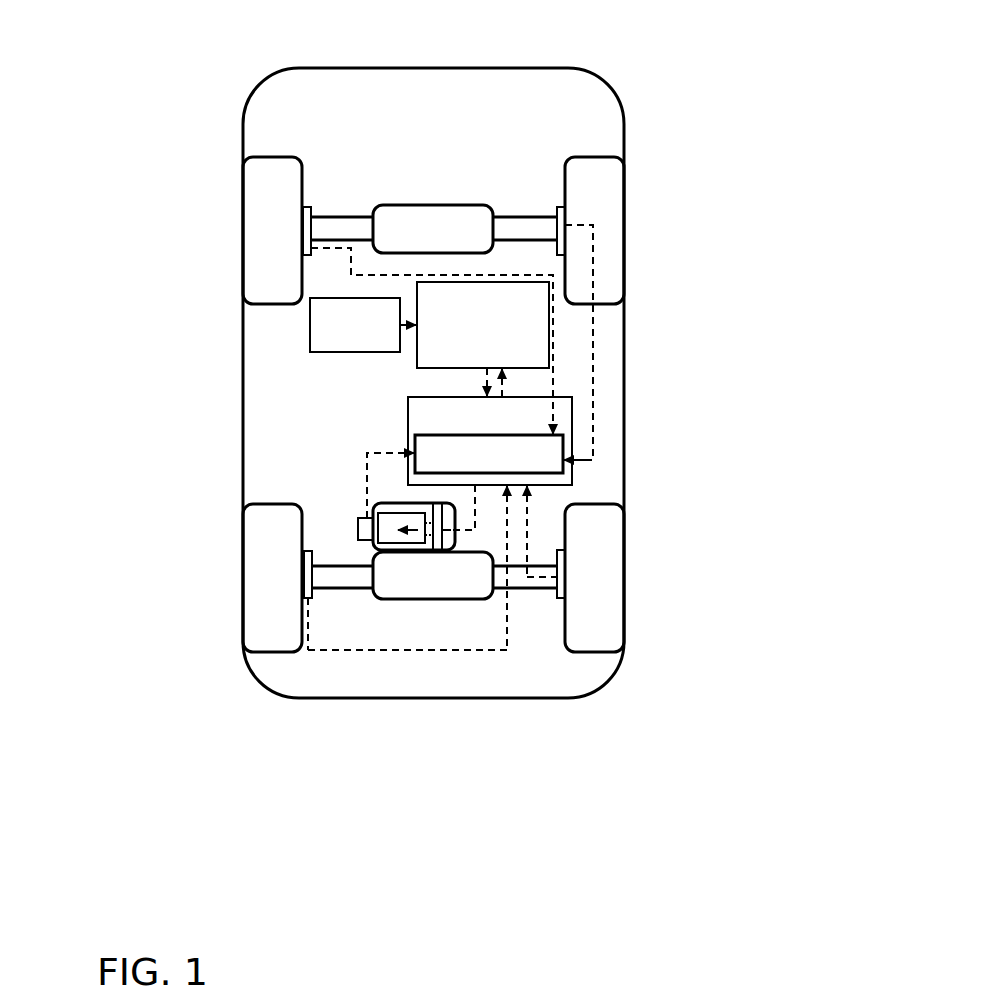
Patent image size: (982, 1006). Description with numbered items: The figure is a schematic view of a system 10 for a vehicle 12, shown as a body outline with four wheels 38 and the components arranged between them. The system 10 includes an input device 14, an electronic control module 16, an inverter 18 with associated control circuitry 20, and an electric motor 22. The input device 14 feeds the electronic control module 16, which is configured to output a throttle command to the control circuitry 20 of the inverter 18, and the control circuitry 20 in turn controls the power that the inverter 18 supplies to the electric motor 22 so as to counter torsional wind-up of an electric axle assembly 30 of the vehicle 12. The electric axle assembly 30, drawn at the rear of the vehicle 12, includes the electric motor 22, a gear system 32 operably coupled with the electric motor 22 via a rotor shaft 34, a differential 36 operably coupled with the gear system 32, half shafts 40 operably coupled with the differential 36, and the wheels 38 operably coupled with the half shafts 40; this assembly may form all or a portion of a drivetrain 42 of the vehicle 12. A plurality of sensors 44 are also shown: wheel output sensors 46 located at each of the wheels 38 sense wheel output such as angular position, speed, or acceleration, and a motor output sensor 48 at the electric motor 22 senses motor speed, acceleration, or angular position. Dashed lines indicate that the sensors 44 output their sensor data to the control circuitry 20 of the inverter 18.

The system 10 is at (657, 133).
The vehicle 12 is at (594, 129).
The input device 14 is at (310, 328).
The electronic control module 16 is at (535, 333).
The inverter 18 is at (558, 420).
The control circuitry 20 is at (553, 465).
The electric motor 22 is at (392, 534).
The electric axle assembly 30 is at (384, 580).
The gear system 32 is at (435, 645).
The rotor shaft 34 is at (440, 541).
The differential 36 is at (458, 580).
The wheel 38 is at (265, 222).
The half shaft 40 is at (522, 583).
The drivetrain 42 is at (476, 590).
The sensor 44 is at (436, 299).
The wheel output sensor 46 is at (310, 207).
The motor output sensor 48 is at (360, 522).